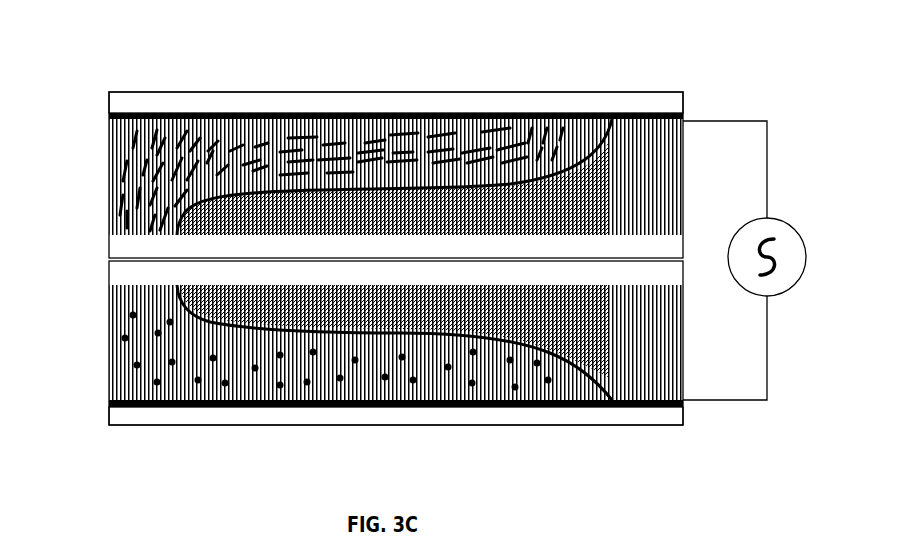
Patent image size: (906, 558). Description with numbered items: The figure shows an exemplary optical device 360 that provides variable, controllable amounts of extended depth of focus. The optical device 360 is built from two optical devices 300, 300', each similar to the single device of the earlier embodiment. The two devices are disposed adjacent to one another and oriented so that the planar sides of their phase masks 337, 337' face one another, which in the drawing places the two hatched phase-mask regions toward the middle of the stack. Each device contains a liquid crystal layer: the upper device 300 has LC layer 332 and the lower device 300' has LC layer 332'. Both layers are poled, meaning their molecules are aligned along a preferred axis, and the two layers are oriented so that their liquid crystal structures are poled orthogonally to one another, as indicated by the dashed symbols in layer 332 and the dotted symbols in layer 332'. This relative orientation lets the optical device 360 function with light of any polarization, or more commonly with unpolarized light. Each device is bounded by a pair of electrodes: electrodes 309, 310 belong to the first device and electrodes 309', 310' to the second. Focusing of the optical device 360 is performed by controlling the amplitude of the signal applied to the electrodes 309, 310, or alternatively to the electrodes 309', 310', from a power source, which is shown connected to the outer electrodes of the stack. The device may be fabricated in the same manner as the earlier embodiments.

The optical device 300 is at (352, 161).
The optical device 300' is at (351, 368).
The electrode 310 is at (396, 89).
The electrode 310' is at (424, 177).
The liquid crystal layer 332 is at (396, 97).
The liquid crystal layer 332' is at (396, 428).
The phase mask 337 is at (423, 189).
The phase mask 337' is at (423, 331).
The electrode 309 is at (396, 441).
The electrode 309' is at (394, 377).
The optical device 360 is at (310, 26).